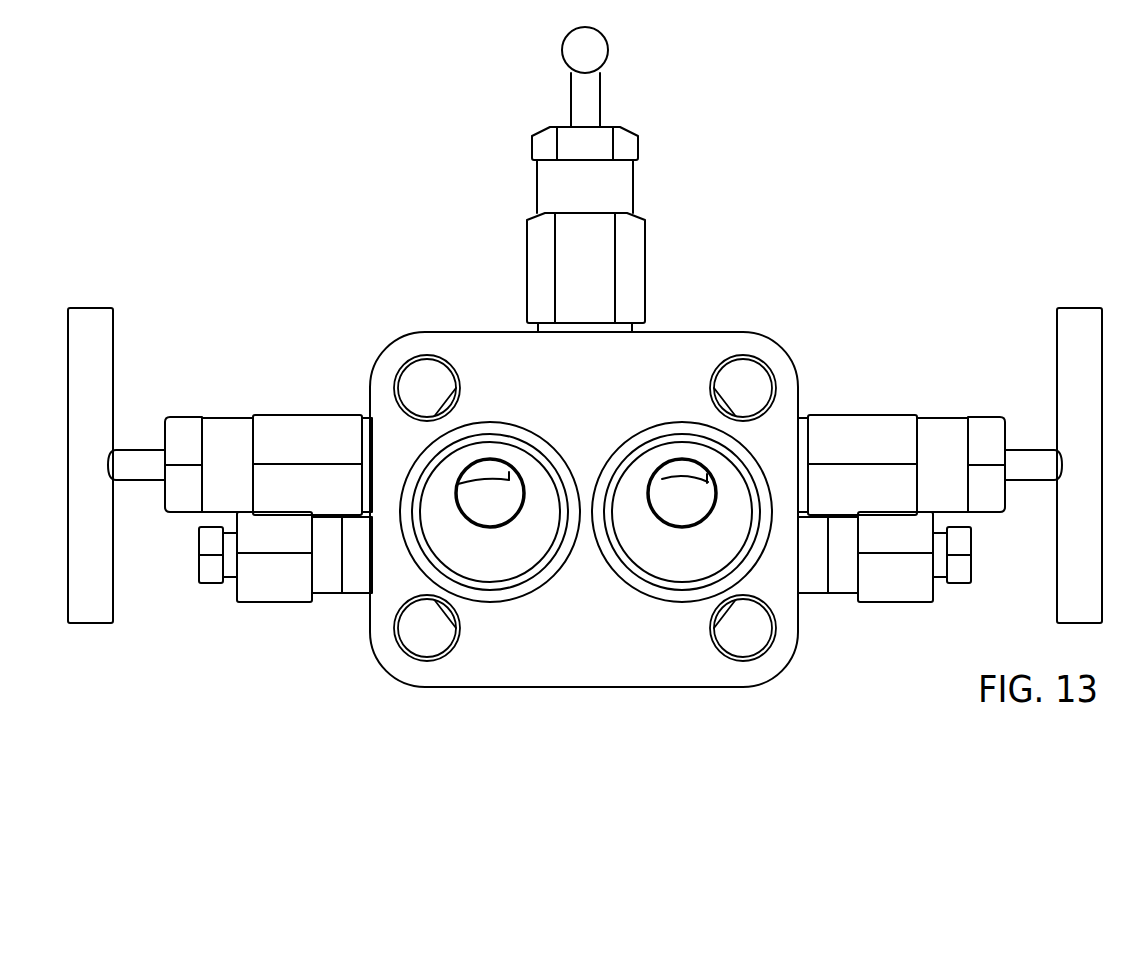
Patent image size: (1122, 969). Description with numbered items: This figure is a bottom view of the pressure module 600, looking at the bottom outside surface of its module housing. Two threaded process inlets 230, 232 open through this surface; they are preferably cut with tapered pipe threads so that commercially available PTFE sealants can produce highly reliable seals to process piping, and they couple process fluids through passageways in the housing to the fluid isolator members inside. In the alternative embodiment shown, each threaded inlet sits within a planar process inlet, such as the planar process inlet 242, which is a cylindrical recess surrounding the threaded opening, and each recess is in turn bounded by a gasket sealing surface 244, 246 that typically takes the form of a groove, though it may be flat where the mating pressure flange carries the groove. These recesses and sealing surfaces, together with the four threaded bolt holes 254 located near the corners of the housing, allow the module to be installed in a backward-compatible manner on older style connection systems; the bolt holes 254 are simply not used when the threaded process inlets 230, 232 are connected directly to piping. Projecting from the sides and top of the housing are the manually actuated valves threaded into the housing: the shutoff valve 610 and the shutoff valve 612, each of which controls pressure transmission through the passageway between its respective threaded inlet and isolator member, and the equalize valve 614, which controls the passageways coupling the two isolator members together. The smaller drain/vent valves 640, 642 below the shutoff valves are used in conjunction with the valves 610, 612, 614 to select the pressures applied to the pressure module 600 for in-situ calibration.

The pressure module 600 is at (585, 379).
The shutoff valve 610 is at (850, 412).
The shutoff valve 612 is at (287, 415).
The equalize valve 614 is at (537, 195).
The drain/vent valve 640 is at (835, 594).
The drain/vent valve 642 is at (305, 603).
The planar process inlet 242 is at (469, 564).
The gasket sealing surface 244 is at (690, 422).
The gasket sealing surface 246 is at (478, 421).
The threaded process inlet 230 is at (677, 459).
The threaded process inlet 232 is at (490, 460).
The threaded bolt holes 254 is at (422, 354).